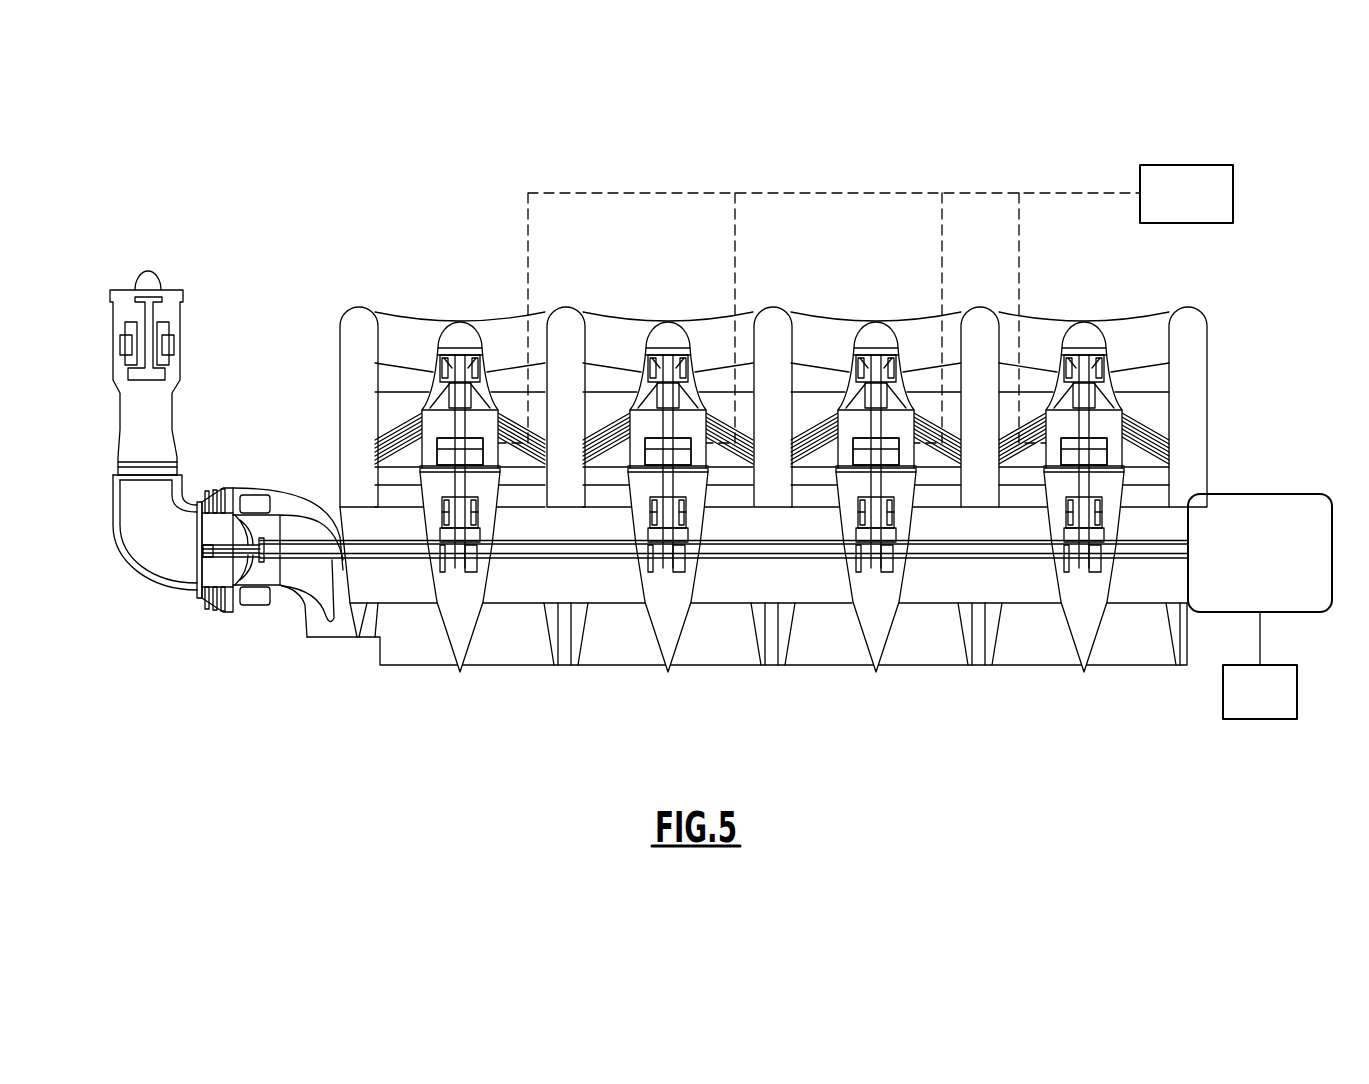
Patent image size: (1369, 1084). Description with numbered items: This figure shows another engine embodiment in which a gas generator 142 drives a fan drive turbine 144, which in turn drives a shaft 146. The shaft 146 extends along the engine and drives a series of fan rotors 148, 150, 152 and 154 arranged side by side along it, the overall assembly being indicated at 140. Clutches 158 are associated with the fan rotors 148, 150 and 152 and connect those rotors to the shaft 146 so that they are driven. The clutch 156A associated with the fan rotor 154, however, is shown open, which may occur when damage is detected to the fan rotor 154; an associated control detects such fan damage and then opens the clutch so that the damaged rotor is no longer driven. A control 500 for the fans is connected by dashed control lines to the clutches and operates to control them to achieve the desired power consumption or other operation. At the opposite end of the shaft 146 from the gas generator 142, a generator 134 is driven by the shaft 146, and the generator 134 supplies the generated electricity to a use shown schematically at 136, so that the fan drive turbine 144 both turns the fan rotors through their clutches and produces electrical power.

The generator 134 is at (1245, 510).
The use 136 is at (1272, 688).
The turbine section 140 is at (352, 294).
The gas generator 142 is at (192, 338).
The fan drive turbine 144 is at (223, 600).
The shaft 146 is at (390, 556).
The fan rotor 148 is at (399, 382).
The fan rotor 150 is at (608, 380).
The fan rotor 152 is at (815, 377).
The fan rotor 154 is at (1022, 387).
The clutch 156A is at (1112, 453).
The clutches 158 is at (420, 444).
The control 500 is at (1211, 207).